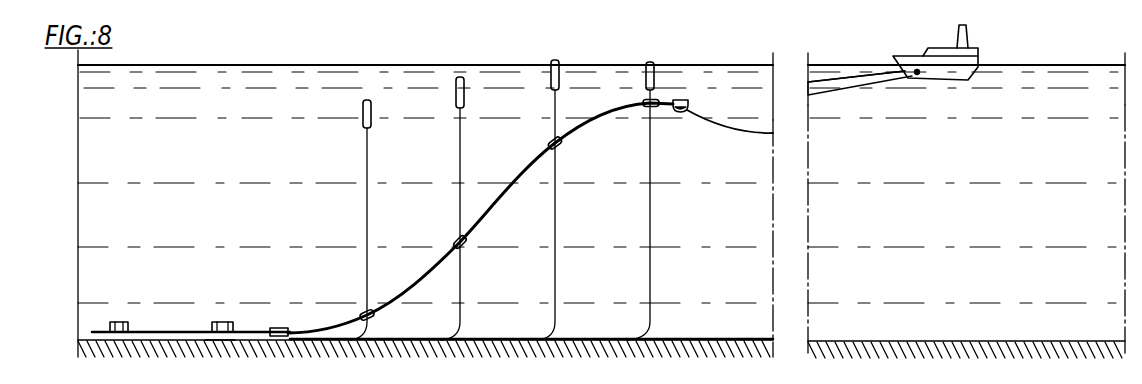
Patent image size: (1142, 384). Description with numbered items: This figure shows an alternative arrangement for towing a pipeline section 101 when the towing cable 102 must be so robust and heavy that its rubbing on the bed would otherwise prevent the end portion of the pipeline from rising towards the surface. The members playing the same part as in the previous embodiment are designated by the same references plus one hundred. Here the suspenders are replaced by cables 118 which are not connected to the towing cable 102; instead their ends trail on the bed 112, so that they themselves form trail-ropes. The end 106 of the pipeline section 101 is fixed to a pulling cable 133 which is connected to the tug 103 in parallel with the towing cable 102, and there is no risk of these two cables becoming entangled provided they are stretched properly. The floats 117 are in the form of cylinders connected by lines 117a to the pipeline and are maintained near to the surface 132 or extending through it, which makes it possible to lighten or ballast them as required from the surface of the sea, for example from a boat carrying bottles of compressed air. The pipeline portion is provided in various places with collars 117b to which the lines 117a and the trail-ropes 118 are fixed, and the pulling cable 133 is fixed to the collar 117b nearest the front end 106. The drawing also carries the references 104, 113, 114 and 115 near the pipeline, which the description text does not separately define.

The pipeline section 101 is at (93, 327).
The towing cable 102 is at (728, 338).
The tug 103 is at (910, 58).
The coupling 104 is at (277, 328).
The end of the pipeline section 106 is at (692, 100).
The bed 112 is at (763, 339).
The pipeline 113 is at (154, 330).
The clamp 114 is at (223, 322).
The anchor point 115 is at (220, 341).
The floats 117 is at (457, 82).
The lines 117a is at (553, 109).
The collars 117b is at (646, 106).
The cables 118 is at (463, 270).
The surface 132 is at (195, 63).
The pulling cable 133 is at (730, 129).